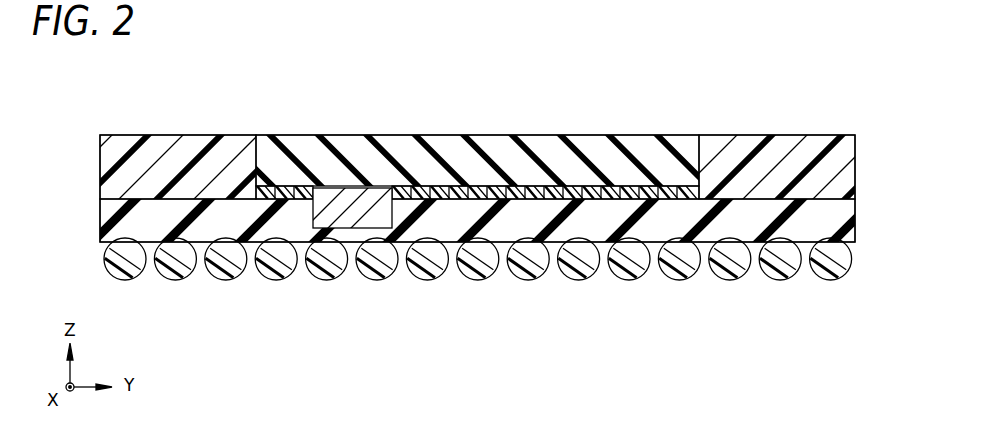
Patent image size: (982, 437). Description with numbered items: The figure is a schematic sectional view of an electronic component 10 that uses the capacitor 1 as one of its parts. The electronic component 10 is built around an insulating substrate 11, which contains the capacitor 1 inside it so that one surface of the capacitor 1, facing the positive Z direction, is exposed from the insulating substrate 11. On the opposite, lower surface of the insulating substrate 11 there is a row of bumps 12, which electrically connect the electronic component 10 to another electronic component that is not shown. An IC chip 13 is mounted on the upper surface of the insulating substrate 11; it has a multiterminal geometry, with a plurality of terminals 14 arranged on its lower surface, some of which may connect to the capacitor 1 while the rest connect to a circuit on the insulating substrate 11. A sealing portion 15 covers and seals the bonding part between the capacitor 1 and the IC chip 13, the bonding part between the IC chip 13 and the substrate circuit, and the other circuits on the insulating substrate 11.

The electronic component 10 is at (828, 116).
The capacitor 1 is at (352, 205).
The insulating substrate 11 is at (843, 207).
The bumps 12 is at (578, 266).
The IC chip 13 is at (492, 146).
The terminals 14 is at (438, 195).
The sealing portion 15 is at (178, 151).